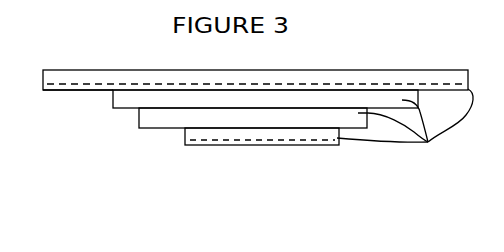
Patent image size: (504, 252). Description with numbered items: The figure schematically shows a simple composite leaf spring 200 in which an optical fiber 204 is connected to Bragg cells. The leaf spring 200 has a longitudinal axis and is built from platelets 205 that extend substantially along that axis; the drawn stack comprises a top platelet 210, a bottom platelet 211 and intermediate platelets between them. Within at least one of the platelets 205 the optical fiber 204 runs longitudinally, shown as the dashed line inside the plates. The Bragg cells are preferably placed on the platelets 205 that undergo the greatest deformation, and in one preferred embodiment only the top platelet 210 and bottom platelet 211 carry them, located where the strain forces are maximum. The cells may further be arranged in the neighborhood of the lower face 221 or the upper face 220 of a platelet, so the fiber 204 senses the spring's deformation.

The leaf spring 200 is at (93, 133).
The optical fiber 204 is at (284, 141).
The platelets 205 is at (428, 142).
The top platelet 210 is at (389, 84).
The bottom platelet 211 is at (186, 137).
The upper face 220 is at (88, 70).
The lower face 221 is at (72, 90).